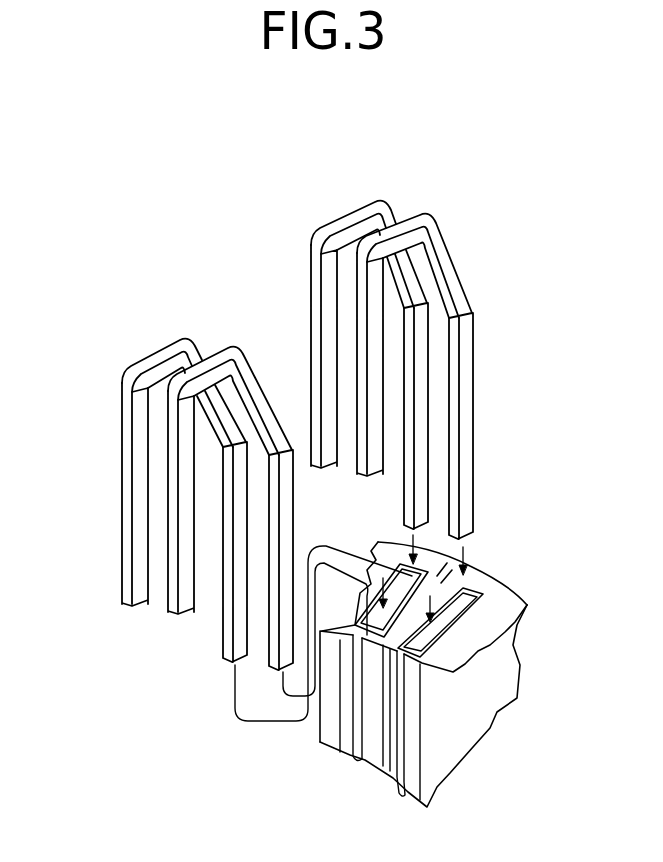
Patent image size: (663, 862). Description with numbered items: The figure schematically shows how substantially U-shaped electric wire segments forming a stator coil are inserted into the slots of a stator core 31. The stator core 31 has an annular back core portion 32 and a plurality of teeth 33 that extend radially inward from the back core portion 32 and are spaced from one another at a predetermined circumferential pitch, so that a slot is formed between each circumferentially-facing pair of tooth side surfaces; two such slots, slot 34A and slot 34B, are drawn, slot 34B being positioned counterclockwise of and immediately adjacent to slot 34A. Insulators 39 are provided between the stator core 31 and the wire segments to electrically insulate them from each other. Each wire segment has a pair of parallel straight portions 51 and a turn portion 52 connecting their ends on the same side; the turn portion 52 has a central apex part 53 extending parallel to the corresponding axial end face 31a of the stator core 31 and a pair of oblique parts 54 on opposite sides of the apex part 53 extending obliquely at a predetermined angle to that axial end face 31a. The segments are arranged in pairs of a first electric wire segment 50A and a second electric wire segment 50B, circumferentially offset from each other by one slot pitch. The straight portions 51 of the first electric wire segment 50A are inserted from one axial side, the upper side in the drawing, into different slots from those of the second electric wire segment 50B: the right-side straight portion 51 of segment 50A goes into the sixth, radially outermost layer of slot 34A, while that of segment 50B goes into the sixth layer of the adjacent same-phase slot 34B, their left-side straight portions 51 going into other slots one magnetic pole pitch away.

The first electric wire segment 50A is at (264, 371).
The second electric wire segment 50B is at (141, 366).
The straight portions 51 is at (270, 582).
The turn portion 52 is at (143, 355).
The apex part 53 is at (182, 335).
The oblique parts 54 is at (160, 347).
The stator core 31 is at (493, 575).
The axial end face 31a is at (498, 597).
The back core portion 32 is at (470, 632).
The insulators 39 is at (425, 655).
The teeth 33 is at (328, 722).
The slot 34A is at (400, 785).
The slot 34B is at (352, 757).